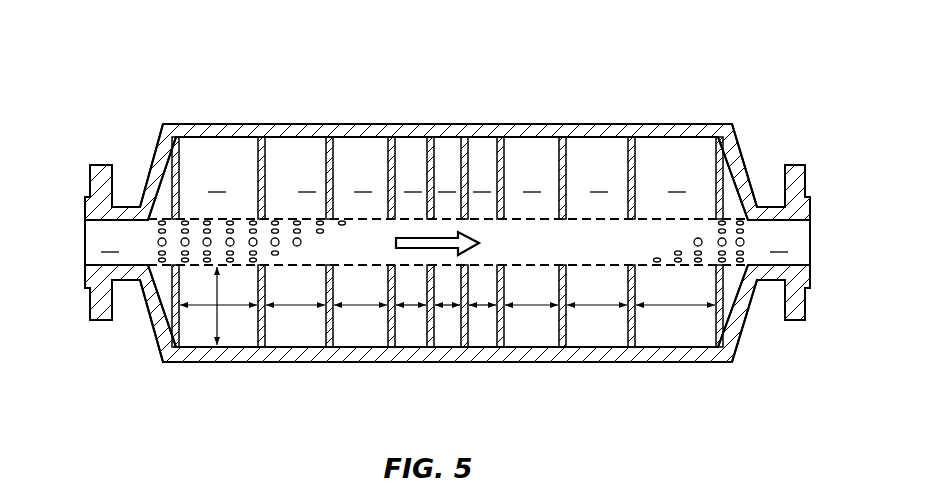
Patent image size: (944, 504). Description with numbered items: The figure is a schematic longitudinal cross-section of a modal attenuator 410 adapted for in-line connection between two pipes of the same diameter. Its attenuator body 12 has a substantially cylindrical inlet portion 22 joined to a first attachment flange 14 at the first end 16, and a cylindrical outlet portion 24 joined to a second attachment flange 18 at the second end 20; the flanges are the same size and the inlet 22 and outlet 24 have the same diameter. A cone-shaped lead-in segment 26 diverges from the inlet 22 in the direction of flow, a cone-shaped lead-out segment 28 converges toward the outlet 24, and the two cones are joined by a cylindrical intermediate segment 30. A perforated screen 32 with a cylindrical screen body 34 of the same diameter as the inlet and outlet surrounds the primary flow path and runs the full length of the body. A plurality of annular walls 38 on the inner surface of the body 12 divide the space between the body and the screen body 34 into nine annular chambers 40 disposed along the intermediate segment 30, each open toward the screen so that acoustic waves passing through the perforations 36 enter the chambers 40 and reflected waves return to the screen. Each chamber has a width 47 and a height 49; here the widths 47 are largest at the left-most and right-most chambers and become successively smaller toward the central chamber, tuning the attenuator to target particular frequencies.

The modal attenuator 410 is at (713, 63).
The attenuator body 12 is at (478, 122).
The first attachment flange 14 is at (90, 312).
The first end 16 is at (85, 282).
The second attachment flange 18 is at (808, 308).
The second end 20 is at (813, 282).
The inlet portion 22 is at (116, 242).
The outlet portion 24 is at (779, 242).
The lead-in segment 26 is at (152, 160).
The lead-out segment 28 is at (749, 180).
The intermediate segment 30 is at (407, 123).
The perforated screen 32 is at (694, 214).
The screen body 34 is at (290, 216).
The perforations 36 is at (324, 231).
The annular walls 38 is at (176, 349).
The annular chambers 40 is at (447, 183).
The width 47 is at (200, 308).
The height 49 is at (219, 318).